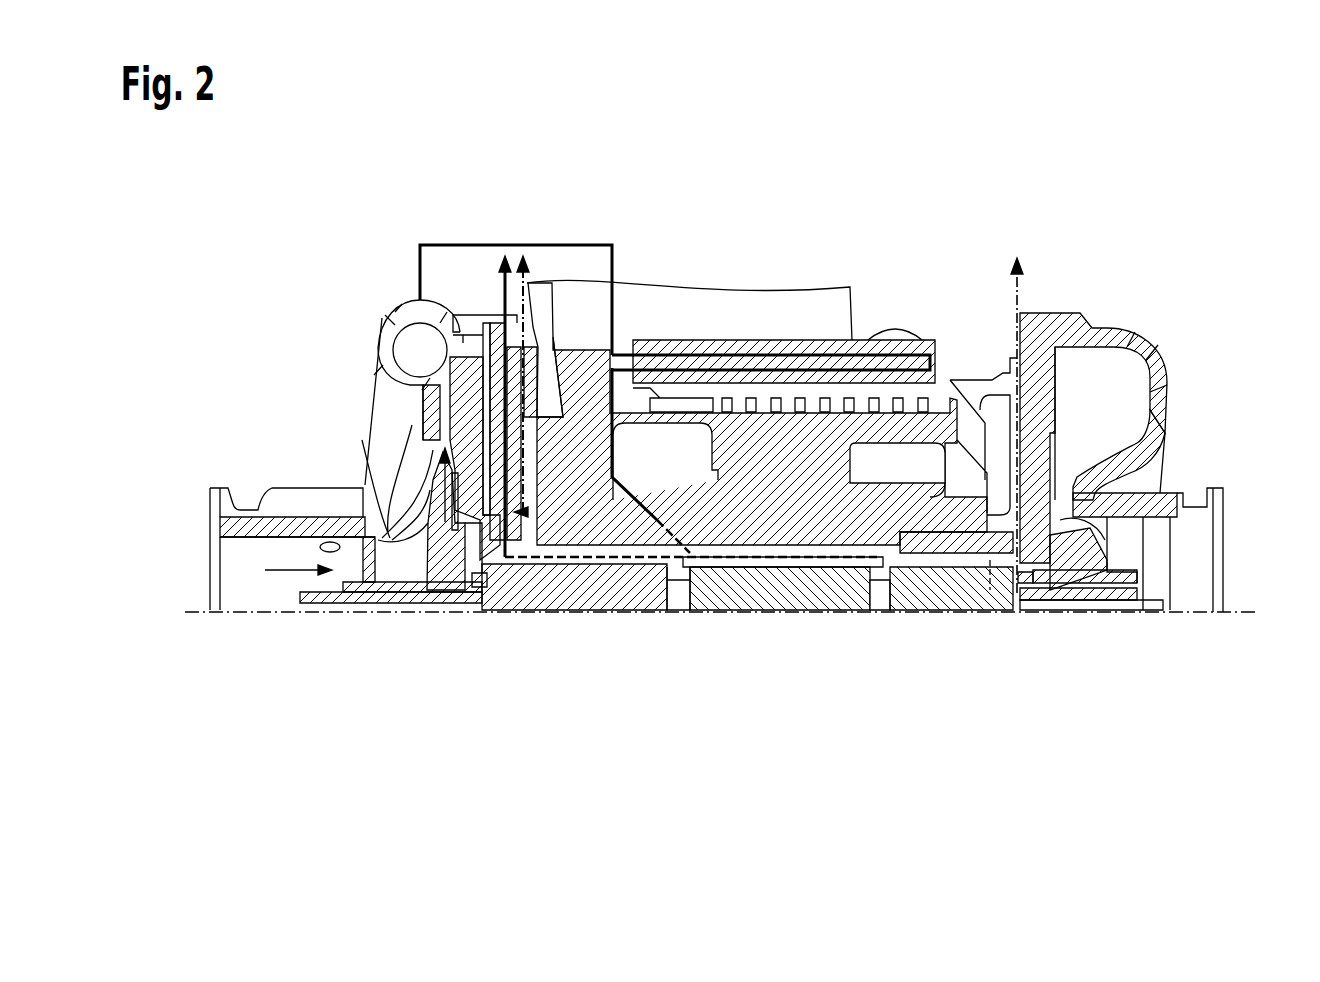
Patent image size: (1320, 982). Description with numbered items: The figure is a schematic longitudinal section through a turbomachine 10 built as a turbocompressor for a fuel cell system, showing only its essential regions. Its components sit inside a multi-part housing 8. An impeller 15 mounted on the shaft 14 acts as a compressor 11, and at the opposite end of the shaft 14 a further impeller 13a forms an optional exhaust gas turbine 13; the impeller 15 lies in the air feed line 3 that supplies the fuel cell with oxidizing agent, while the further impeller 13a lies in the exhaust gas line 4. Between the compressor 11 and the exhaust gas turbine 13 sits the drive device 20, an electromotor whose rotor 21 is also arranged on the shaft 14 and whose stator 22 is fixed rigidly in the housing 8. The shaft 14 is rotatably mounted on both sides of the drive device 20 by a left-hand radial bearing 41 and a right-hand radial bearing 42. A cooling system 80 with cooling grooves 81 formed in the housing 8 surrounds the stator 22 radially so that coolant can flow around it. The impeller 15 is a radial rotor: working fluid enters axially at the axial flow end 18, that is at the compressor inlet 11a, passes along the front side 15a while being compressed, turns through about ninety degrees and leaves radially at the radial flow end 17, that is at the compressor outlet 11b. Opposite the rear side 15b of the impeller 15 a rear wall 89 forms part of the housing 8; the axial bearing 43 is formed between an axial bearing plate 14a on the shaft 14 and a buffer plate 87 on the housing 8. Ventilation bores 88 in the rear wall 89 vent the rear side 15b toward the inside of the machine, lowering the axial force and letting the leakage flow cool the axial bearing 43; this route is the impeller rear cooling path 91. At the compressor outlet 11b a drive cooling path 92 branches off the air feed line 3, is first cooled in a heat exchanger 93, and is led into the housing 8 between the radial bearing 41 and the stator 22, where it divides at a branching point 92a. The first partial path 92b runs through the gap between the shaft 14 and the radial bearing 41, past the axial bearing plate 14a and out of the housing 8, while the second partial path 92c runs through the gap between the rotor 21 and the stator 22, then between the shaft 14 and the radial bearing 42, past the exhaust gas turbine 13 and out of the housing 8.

The air feed line 3 is at (243, 548).
The exhaust gas line 4 is at (1200, 563).
The housing 8 is at (972, 390).
The turbomachine 10 is at (1131, 236).
The compressor 11 is at (344, 611).
The compressor inlet 11a is at (243, 588).
The compressor outlet 11b is at (447, 440).
The exhaust gas turbine 13 is at (1112, 612).
The further impeller 13a is at (1078, 603).
The shaft 14 is at (556, 592).
The axial bearing plate 14a is at (522, 592).
The impeller 15 is at (385, 600).
The front side 15a is at (397, 541).
The rear side 15b is at (470, 592).
The radial flow end 17 is at (495, 426).
The axial flow end 18 is at (272, 585).
The drive device 20 is at (865, 628).
The rotor 21 is at (820, 600).
The stator 22 is at (745, 455).
The radial bearing 41 is at (652, 600).
The radial bearing 42 is at (928, 552).
The axial bearing 43 is at (595, 590).
The cooling system 80 is at (790, 396).
The cooling grooves 81 is at (862, 400).
The buffer plate 87 is at (415, 348).
The ventilation bores 88 is at (440, 565).
The rear wall 89 is at (467, 427).
The impeller rear cooling path 91 is at (478, 298).
The drive cooling path 92 is at (574, 245).
The branching point 92a is at (738, 600).
The first partial path 92b is at (693, 600).
The second partial path 92c is at (990, 592).
The heat exchanger 93 is at (690, 345).